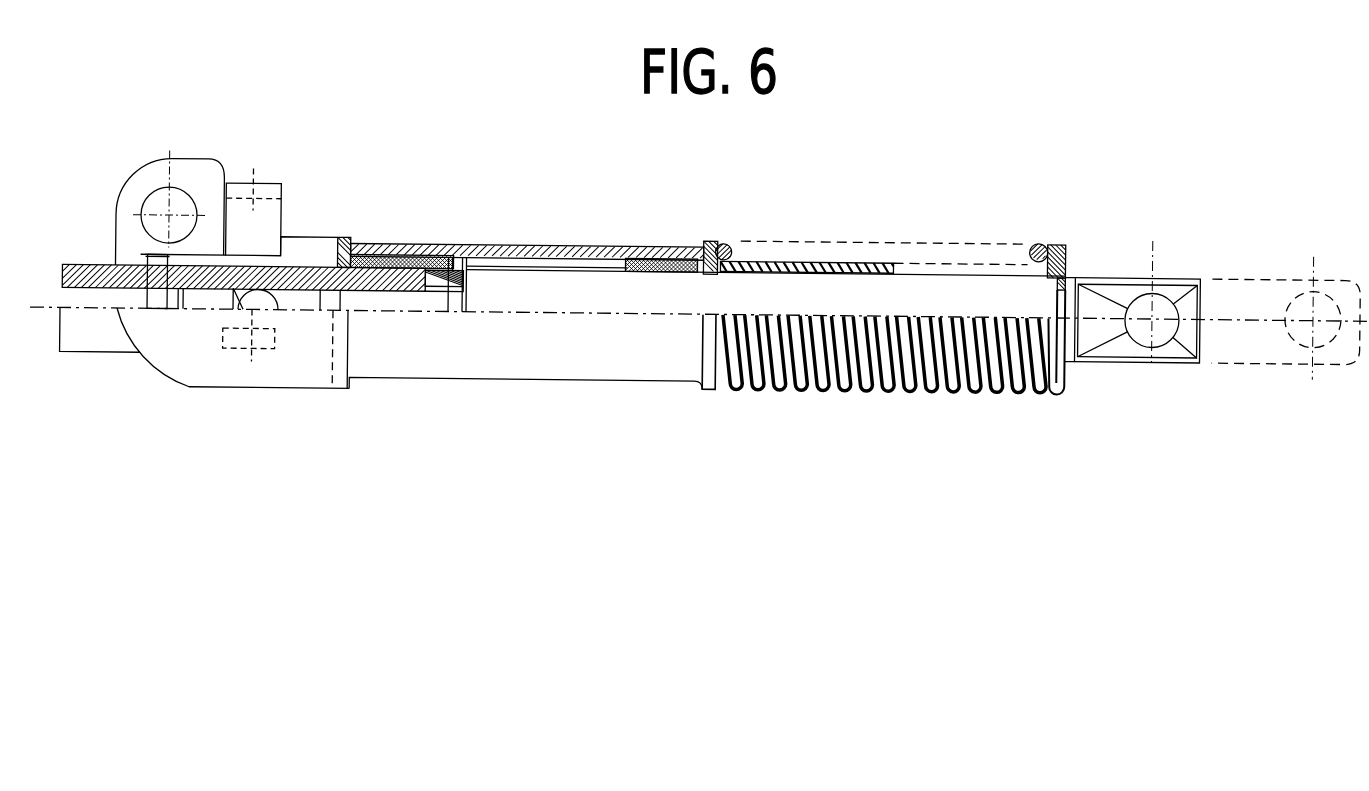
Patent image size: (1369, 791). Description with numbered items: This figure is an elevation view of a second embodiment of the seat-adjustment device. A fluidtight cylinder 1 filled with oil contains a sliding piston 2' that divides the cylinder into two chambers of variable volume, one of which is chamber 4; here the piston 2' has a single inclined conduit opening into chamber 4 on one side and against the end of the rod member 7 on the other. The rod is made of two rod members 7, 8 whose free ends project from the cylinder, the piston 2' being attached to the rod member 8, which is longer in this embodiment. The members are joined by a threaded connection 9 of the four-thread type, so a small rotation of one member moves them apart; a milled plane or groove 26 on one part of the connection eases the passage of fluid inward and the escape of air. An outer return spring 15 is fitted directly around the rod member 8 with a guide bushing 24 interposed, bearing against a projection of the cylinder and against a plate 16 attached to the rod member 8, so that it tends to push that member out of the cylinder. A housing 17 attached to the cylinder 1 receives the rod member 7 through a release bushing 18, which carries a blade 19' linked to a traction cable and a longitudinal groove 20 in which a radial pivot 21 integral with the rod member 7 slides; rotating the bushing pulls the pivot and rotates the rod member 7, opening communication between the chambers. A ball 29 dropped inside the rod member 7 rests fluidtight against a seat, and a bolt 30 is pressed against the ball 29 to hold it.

The cylinder 1 is at (620, 245).
The piston 2' is at (409, 235).
The chamber 4 is at (545, 265).
The rod member 7 is at (305, 276).
The rod member 8 is at (925, 290).
The threaded connection 9 is at (413, 308).
The return spring 15 is at (788, 385).
The plate 16 is at (1065, 240).
The housing 17 is at (172, 357).
The release bushing 18 is at (292, 244).
The blade 19' is at (253, 214).
The longitudinal groove 20 is at (210, 259).
The radial pivot 21 is at (150, 265).
The guide bushing 24 is at (757, 262).
The groove 26 is at (443, 295).
The ball 29 is at (267, 307).
The bolt 30 is at (205, 297).